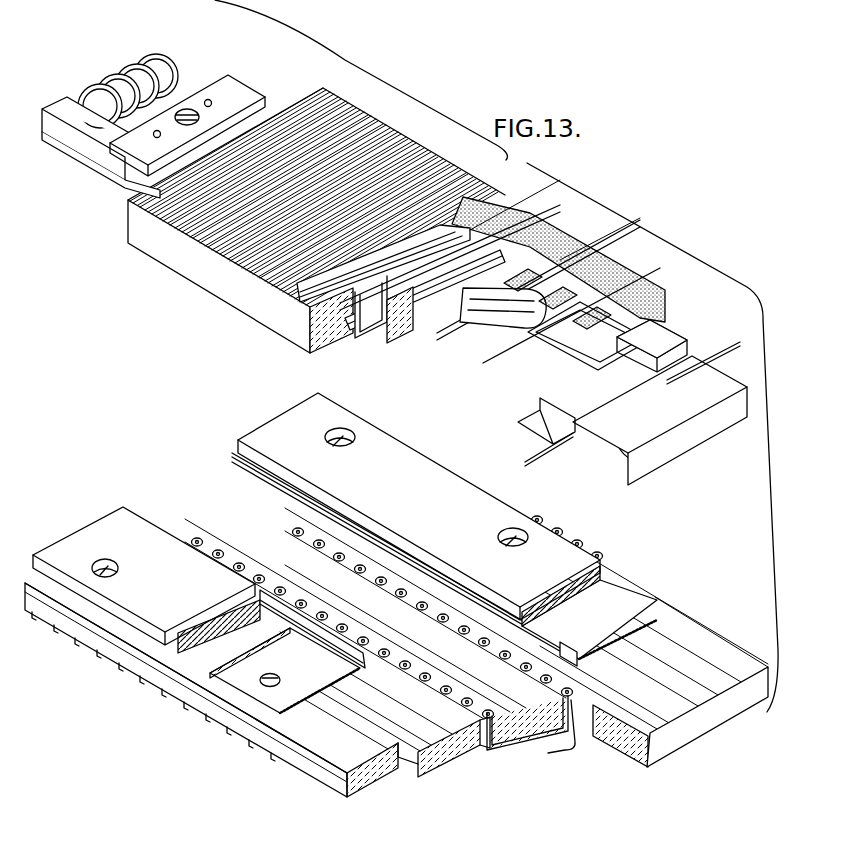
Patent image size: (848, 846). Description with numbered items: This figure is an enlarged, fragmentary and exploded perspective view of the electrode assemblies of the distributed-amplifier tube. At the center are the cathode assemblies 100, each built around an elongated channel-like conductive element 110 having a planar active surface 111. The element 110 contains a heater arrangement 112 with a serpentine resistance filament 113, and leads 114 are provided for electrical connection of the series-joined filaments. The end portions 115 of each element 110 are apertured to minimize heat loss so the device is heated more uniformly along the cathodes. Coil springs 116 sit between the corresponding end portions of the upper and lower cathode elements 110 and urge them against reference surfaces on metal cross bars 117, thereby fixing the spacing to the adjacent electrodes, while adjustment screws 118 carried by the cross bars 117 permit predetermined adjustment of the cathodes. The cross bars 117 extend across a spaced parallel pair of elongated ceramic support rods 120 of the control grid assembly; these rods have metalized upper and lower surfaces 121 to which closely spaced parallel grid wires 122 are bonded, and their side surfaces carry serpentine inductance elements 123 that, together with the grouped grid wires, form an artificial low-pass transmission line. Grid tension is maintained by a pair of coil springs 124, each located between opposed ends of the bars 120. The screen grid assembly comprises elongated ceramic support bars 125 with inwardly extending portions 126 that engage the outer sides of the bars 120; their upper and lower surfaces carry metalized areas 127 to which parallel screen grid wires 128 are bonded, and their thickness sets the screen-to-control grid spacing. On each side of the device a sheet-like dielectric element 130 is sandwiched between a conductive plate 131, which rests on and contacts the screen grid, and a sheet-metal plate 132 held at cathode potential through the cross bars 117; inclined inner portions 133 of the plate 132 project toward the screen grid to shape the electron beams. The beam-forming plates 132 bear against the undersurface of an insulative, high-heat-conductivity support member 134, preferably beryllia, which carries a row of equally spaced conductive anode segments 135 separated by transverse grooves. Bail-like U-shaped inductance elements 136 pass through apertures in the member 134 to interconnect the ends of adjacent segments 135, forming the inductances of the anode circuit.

The cathode assembly 100 is at (497, 350).
The channel-like conductive element 110 is at (517, 348).
The planar active surface 111 is at (573, 313).
The heater arrangement 112 is at (603, 320).
The serpentine resistance filament 113 is at (473, 318).
The leads 114 is at (723, 352).
The end portions 115 is at (620, 362).
The coil springs 116 is at (640, 393).
The cross bars 117 is at (122, 157).
The adjustment screws 118 is at (159, 131).
The ceramic support rods 120 is at (60, 108).
The metalized upper and lower surfaces 121 is at (553, 293).
The grid wires 122 is at (433, 287).
The inductance elements 123 is at (372, 333).
The coil springs 124 is at (128, 78).
The ceramic support bars 125 is at (310, 350).
The inwardly extending portions 126 is at (350, 327).
The metalized areas 127 is at (502, 207).
The screen grid wires 128 is at (307, 177).
The dielectric element 130 is at (203, 653).
The conductive plate 131 is at (263, 432).
The sheet-metal plate 132 is at (253, 690).
The inclined inner portions 133 is at (333, 640).
The support member 134 is at (380, 773).
The anode segments 135 is at (418, 592).
The inductance elements 136 is at (540, 737).